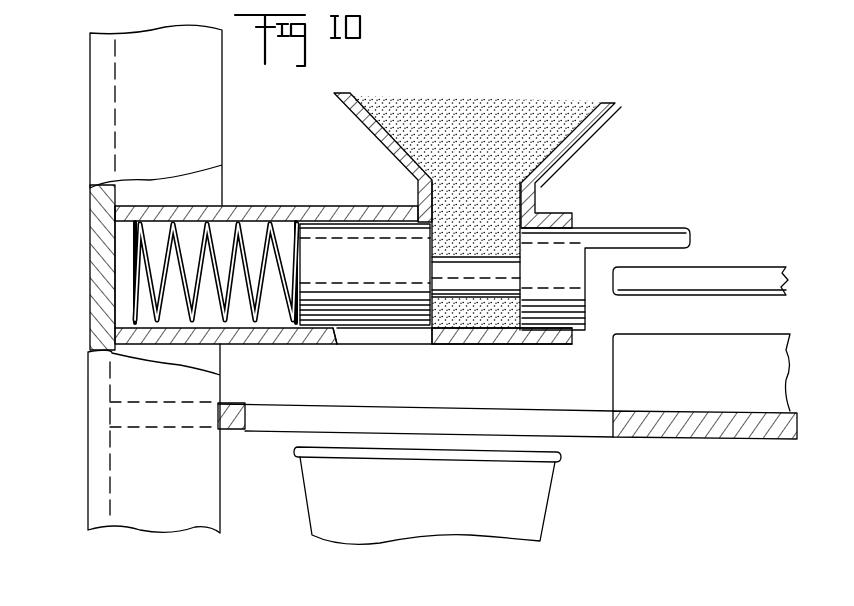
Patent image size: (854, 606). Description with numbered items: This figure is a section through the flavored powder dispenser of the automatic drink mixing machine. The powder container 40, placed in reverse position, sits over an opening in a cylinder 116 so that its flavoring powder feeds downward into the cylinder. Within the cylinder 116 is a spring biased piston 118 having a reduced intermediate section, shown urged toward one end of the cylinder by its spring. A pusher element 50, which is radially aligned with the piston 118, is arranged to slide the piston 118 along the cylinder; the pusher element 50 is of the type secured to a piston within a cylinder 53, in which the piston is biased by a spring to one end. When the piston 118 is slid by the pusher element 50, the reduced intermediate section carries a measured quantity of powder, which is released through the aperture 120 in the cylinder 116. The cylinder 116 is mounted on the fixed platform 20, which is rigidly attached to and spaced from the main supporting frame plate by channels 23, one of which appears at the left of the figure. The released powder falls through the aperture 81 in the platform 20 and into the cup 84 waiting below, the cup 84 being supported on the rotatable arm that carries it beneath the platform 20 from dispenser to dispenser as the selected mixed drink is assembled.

The channels 23 is at (98, 70).
The cylinder 116 is at (260, 221).
The spring biased piston 118 is at (368, 255).
The aperture 120 is at (343, 331).
The powder container 40 is at (589, 122).
The pusher element 50 is at (740, 278).
The cylinder 53 is at (745, 350).
The fixed platform 20 is at (705, 423).
The aperture 81 is at (247, 414).
The cup 84 is at (527, 490).